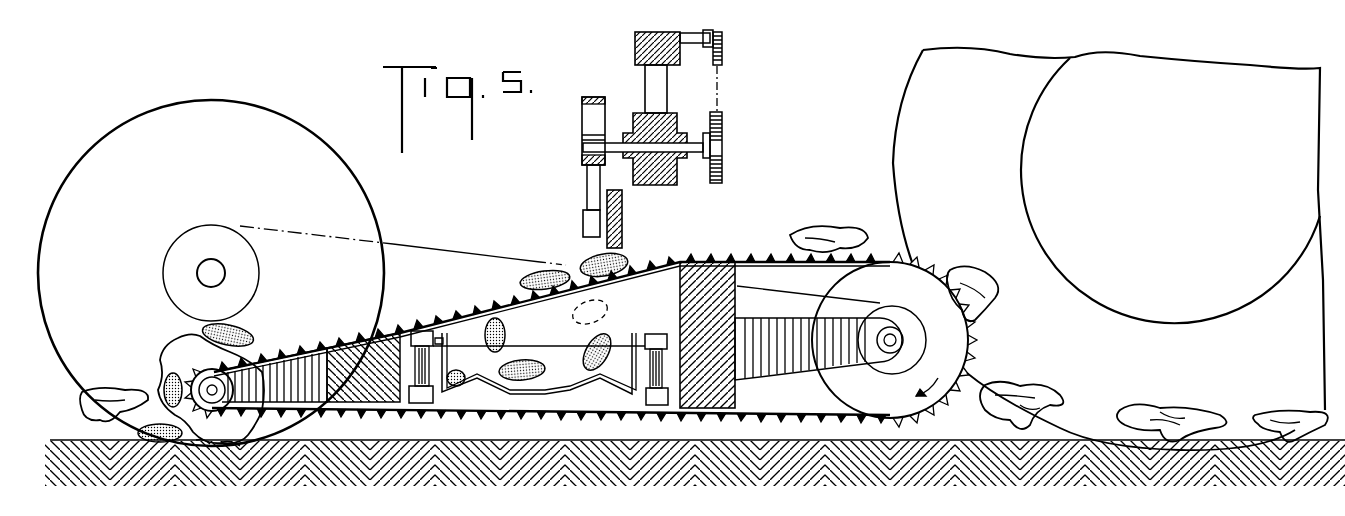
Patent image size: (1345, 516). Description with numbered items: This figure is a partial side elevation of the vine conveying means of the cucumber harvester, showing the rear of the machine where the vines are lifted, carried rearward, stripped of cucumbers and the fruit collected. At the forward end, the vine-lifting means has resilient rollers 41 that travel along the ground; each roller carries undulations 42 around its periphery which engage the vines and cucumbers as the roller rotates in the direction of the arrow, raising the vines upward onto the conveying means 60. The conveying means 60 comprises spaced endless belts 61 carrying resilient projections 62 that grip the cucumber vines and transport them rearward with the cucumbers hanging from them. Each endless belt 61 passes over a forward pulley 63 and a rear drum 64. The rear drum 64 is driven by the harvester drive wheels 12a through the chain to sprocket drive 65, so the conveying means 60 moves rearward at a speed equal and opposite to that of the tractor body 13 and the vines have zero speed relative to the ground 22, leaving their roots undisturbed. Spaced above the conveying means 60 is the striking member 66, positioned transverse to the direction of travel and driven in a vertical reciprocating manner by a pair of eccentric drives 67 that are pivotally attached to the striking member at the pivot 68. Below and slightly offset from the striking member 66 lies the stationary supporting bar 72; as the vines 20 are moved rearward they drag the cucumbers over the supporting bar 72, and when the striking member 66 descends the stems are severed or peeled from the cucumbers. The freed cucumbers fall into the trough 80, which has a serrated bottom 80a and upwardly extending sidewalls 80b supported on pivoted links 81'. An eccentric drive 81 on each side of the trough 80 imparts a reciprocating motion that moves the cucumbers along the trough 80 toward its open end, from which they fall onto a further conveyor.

The harvester machine drive wheels 12a is at (213, 122).
The tractor body 13 is at (1192, 216).
The vines 20 is at (1168, 415).
The ground surface 22 is at (993, 480).
The resilient rollers 41 is at (202, 447).
The undulations 42 is at (180, 352).
The conveying means 60 is at (417, 240).
The endless belts 61 is at (325, 345).
The resilient projections 62 is at (368, 345).
The forward pulley 63 is at (230, 450).
The rear drum 64 is at (957, 338).
The chain to sprocket drive 65 is at (476, 252).
The striking member 66 is at (623, 207).
The eccentric drives 67 is at (590, 97).
The pivotal attachment 68 is at (583, 218).
The stationary supporting bar 72 is at (668, 258).
The trough 80 is at (528, 393).
The serrated bottom 80a is at (582, 348).
The upwardly extending sidewalls 80b is at (483, 318).
The eccentric drive 81 is at (683, 367).
The pivoted links 81' is at (424, 330).